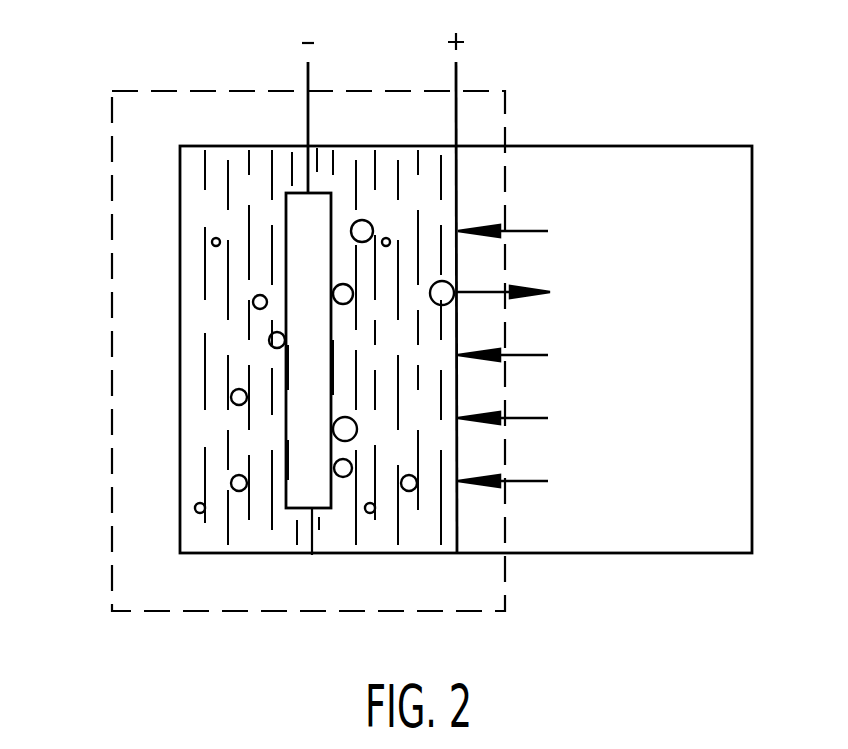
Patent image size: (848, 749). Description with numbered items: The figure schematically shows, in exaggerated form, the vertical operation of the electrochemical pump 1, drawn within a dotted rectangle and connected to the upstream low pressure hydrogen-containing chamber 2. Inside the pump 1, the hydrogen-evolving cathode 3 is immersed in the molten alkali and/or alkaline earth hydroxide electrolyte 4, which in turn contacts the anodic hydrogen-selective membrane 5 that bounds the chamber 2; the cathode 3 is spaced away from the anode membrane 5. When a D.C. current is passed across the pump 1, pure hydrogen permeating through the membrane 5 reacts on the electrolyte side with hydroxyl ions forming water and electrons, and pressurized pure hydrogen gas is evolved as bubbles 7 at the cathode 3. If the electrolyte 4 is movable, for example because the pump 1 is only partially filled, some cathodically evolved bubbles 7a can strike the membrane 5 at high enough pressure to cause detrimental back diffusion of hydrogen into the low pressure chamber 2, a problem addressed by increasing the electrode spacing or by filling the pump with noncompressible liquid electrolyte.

The electrochemical pump 1 is at (112, 348).
The low pressure hydrogen-containing chamber 2 is at (707, 331).
The hydrogen-evolving cathode 3 is at (312, 555).
The molten alkali and/or alkaline earth hydroxide electrolyte 4 is at (203, 207).
The anodic hydrogen-selective membrane 5 is at (460, 520).
The hydrogen gas bubbles 7 is at (367, 222).
The cathodically evolved bubbles 7a is at (449, 283).